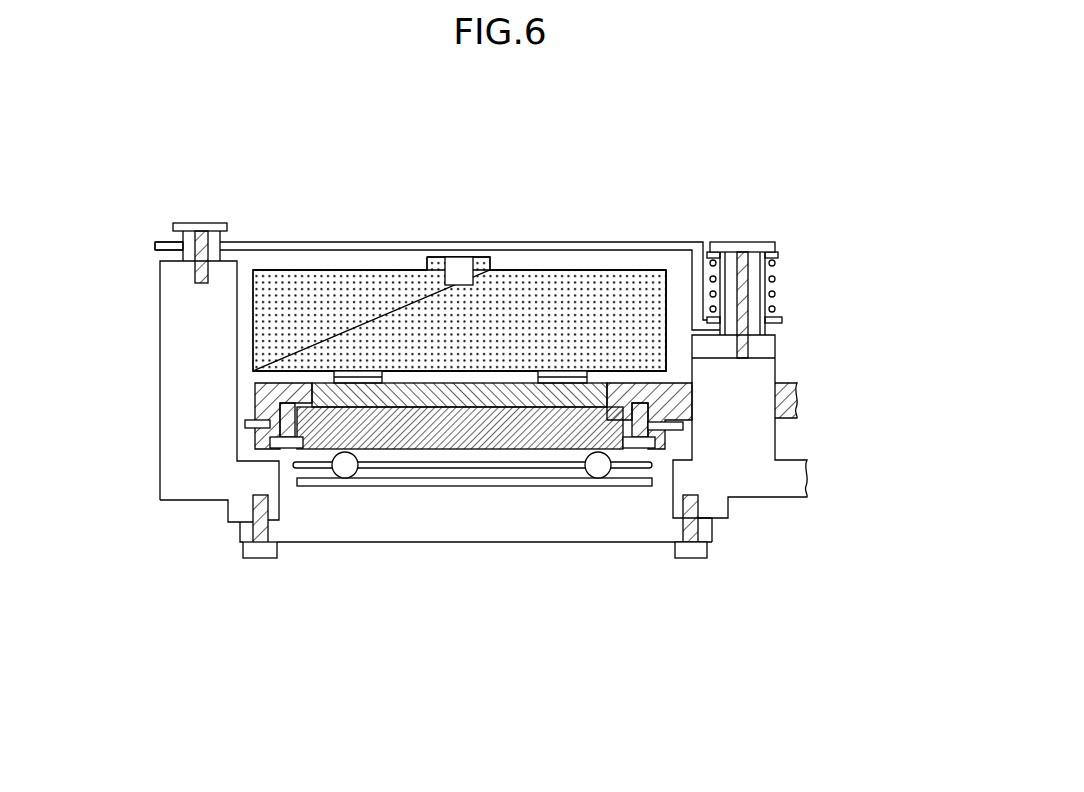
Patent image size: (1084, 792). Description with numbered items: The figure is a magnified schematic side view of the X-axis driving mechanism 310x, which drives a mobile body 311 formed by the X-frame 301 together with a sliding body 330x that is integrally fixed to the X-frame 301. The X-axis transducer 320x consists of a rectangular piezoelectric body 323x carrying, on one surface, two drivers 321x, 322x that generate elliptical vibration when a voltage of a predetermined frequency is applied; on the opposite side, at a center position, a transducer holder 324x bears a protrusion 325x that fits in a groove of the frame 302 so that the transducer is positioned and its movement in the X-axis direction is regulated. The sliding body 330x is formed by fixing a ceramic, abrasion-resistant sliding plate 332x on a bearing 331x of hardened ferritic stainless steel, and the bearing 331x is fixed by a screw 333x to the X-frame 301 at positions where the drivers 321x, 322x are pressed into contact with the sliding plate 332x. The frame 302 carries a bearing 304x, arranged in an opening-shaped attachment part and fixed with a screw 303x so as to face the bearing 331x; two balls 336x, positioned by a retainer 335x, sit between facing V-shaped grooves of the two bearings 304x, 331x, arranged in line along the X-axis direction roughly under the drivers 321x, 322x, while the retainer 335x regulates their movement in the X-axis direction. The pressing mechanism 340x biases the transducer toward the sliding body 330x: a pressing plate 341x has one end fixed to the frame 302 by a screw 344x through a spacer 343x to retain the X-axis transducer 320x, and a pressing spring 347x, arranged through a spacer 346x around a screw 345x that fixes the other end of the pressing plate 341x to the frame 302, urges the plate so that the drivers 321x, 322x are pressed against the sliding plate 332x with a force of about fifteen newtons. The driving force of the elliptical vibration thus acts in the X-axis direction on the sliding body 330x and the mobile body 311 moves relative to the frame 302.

The X-frame 301 is at (790, 397).
The frame 302 is at (178, 366).
The screw 303x is at (262, 560).
The bearing 304x is at (343, 532).
The X-axis driving mechanism 310x is at (614, 134).
The mobile body 311 is at (818, 423).
The X-axis transducer 320x is at (275, 261).
The driver 321x is at (358, 375).
The driver 322x is at (562, 377).
The piezoelectric body 323x is at (518, 272).
The transducer holder 324x is at (434, 262).
The protrusion 325x is at (459, 262).
The sliding body 330x is at (460, 447).
The bearing 331x is at (548, 449).
The sliding plate 332x is at (402, 392).
The screw 333x is at (285, 431).
The retainer 335x is at (297, 473).
The ball 336x is at (340, 476).
The pressing mechanism 340x is at (797, 284).
The pressing plate 341x is at (664, 242).
The spacer 343x is at (156, 243).
The screw 344x is at (190, 223).
The screw 345x is at (776, 242).
The spacer 346x is at (757, 262).
The pressing spring 347x is at (790, 262).